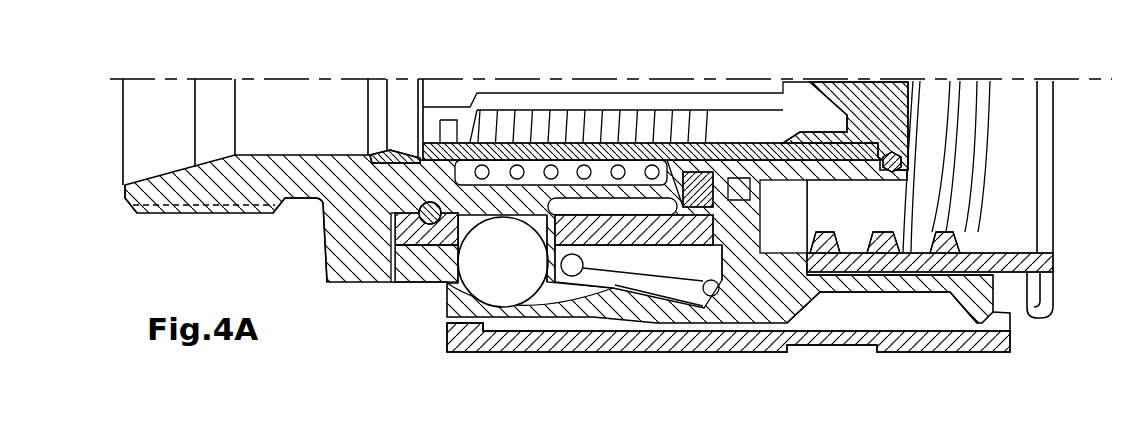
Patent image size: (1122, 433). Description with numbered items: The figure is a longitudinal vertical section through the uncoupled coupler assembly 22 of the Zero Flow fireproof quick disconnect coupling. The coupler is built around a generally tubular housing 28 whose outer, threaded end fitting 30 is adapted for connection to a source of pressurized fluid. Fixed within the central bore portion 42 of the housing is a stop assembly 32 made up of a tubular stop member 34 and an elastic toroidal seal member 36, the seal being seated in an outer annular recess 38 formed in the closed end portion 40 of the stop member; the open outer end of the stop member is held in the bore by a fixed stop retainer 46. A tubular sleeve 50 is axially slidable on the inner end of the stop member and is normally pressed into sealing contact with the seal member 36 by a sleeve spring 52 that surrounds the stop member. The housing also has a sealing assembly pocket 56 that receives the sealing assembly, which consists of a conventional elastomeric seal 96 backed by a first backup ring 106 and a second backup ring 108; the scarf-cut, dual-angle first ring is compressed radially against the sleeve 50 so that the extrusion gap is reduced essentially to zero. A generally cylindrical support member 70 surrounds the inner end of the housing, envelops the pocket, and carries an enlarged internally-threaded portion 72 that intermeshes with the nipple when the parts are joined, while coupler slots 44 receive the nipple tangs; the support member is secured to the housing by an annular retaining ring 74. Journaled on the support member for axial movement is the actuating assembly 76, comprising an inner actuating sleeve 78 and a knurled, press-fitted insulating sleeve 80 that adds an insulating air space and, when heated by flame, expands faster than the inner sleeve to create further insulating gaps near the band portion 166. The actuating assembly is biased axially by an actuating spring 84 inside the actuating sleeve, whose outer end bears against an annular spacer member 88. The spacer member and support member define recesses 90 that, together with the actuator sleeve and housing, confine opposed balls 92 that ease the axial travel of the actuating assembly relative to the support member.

The coupler assembly 22 is at (329, 286).
The tubular housing 28 is at (308, 200).
The end fitting 30 is at (172, 216).
The stop assembly 32 is at (921, 163).
The stop member 34 is at (893, 123).
The seal member 36 is at (908, 256).
The annular recess 38 is at (836, 291).
The closed end portion 40 is at (915, 157).
The central bore portion 42 is at (263, 155).
The coupler slots 44 is at (1013, 297).
The stop retainer 46 is at (395, 152).
The sleeve 50 is at (772, 183).
The sleeve spring 52 is at (546, 175).
The sealing assembly pocket 56 is at (708, 233).
The support member 70 is at (623, 233).
The internally-threaded portion 72 is at (875, 274).
The retaining ring 74 is at (382, 284).
The actuating assembly 76 is at (645, 356).
The actuating sleeve 78 is at (554, 300).
The insulating sleeve 80 is at (495, 340).
The actuating spring 84 is at (572, 268).
The spacer member 88 is at (432, 272).
The recesses 90 is at (455, 284).
The balls 92 is at (503, 262).
The elastomeric seal 96 is at (700, 172).
The first backup ring 106 is at (740, 176).
The second backup ring 108 is at (712, 172).
The band portion 166 is at (463, 340).